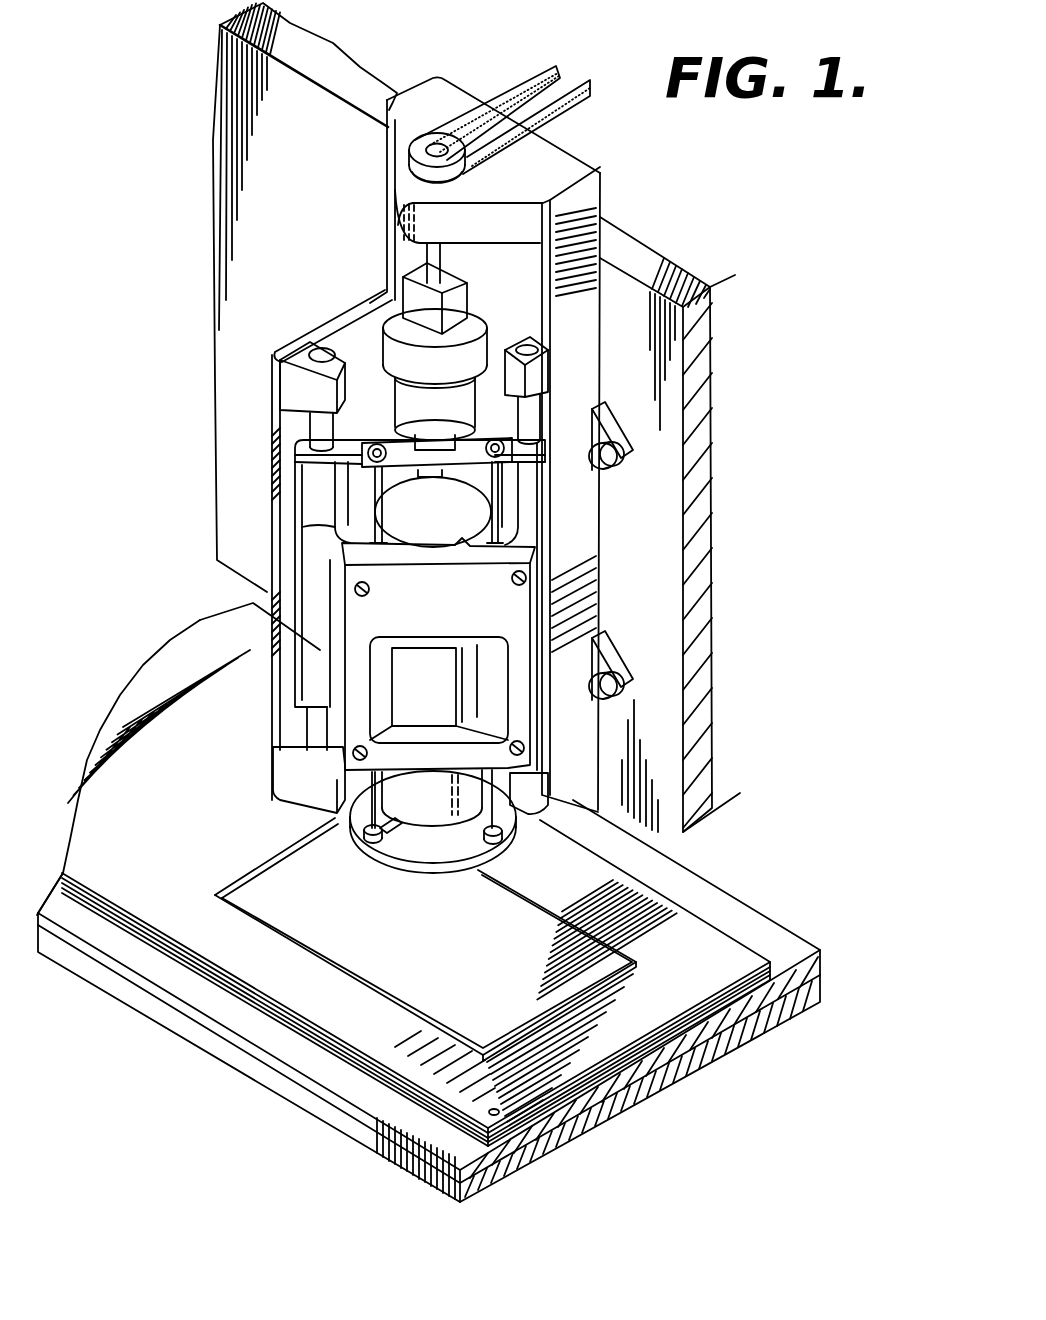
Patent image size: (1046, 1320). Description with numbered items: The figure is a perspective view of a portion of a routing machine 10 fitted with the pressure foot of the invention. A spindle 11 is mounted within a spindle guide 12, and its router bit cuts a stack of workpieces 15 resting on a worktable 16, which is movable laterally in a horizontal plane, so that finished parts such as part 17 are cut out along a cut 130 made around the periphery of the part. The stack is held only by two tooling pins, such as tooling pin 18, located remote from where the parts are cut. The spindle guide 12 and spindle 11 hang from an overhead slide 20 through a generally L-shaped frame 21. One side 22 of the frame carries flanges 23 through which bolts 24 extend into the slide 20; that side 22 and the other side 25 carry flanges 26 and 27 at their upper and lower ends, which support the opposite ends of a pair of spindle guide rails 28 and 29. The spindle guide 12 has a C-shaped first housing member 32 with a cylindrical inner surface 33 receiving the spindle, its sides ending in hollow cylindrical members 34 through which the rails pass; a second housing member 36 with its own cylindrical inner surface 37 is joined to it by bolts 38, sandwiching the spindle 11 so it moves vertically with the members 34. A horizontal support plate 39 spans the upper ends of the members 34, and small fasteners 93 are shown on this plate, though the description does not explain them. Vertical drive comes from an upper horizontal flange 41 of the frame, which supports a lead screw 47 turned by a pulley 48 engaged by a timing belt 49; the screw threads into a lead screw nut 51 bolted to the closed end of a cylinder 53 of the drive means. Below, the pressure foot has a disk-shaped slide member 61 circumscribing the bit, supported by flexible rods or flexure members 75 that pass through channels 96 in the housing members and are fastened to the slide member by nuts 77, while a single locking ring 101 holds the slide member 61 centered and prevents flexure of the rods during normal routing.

The routing machine 10 is at (185, 267).
The spindle 11 is at (432, 655).
The spindle guide 12 is at (282, 659).
The workpieces 15 is at (345, 1030).
The worktable 16 is at (388, 1142).
The part 17 is at (447, 954).
The tooling pin 18 is at (500, 1110).
The overhead slide 20 is at (700, 424).
The frame 21 is at (337, 314).
The side of frame 22 is at (524, 287).
The flanges 23 is at (612, 424).
The bolts 24 is at (608, 452).
The other side of frame 25 is at (280, 460).
The flanges 26 is at (535, 355).
The flanges 27 is at (290, 384).
The spindle guide rail 28 is at (545, 418).
The spindle guide rail 29 is at (300, 425).
The first housing member 32 is at (332, 520).
The cylindrical inner surface 33 is at (475, 505).
The cylindrical members 34 is at (320, 510).
The second housing member 36 is at (464, 626).
The cylindrical inner surface 37 is at (450, 562).
The bolts 38 is at (368, 592).
The horizontal support plate 39 is at (378, 416).
The upper horizontal flange 41 is at (405, 152).
The lead screw 47 is at (440, 258).
The pulley 48 is at (437, 147).
The timing belt 49 is at (553, 120).
The lead screw nut 51 is at (455, 302).
The cylinder 53 is at (487, 342).
The slide member 61 is at (412, 853).
The flexure members 75 is at (360, 489).
The nuts 77 is at (360, 838).
The lock nuts 93 is at (500, 428).
The channels 96 is at (390, 532).
The locking ring 101 is at (385, 826).
The cut 130 is at (218, 890).